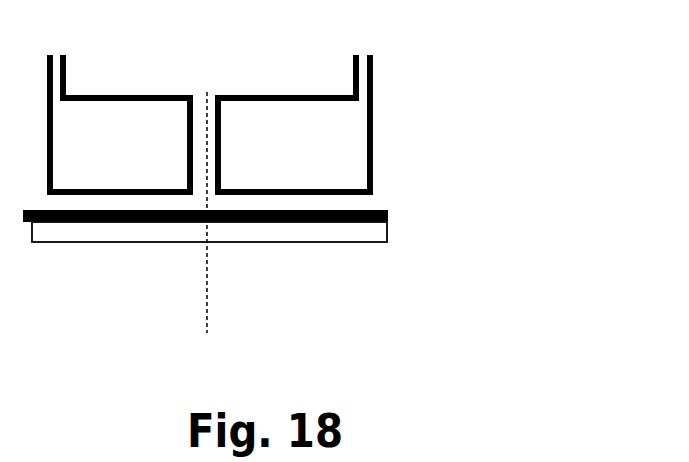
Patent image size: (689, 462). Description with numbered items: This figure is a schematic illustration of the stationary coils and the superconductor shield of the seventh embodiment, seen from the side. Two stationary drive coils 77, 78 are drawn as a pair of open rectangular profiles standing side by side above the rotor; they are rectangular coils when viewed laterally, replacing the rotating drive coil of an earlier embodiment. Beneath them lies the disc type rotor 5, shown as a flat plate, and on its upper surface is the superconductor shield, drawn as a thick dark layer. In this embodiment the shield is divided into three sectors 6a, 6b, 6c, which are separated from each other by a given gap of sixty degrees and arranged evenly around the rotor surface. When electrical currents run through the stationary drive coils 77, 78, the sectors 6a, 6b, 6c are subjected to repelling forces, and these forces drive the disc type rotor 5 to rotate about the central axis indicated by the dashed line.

The disc type rotor 5 is at (375, 233).
The sector of superconductor shield 6a is at (330, 181).
The sector of superconductor shield 6b is at (330, 181).
The sector of superconductor shield 6c is at (382, 208).
The stationary drive coil 77 is at (373, 137).
The stationary drive coil 78 is at (93, 95).